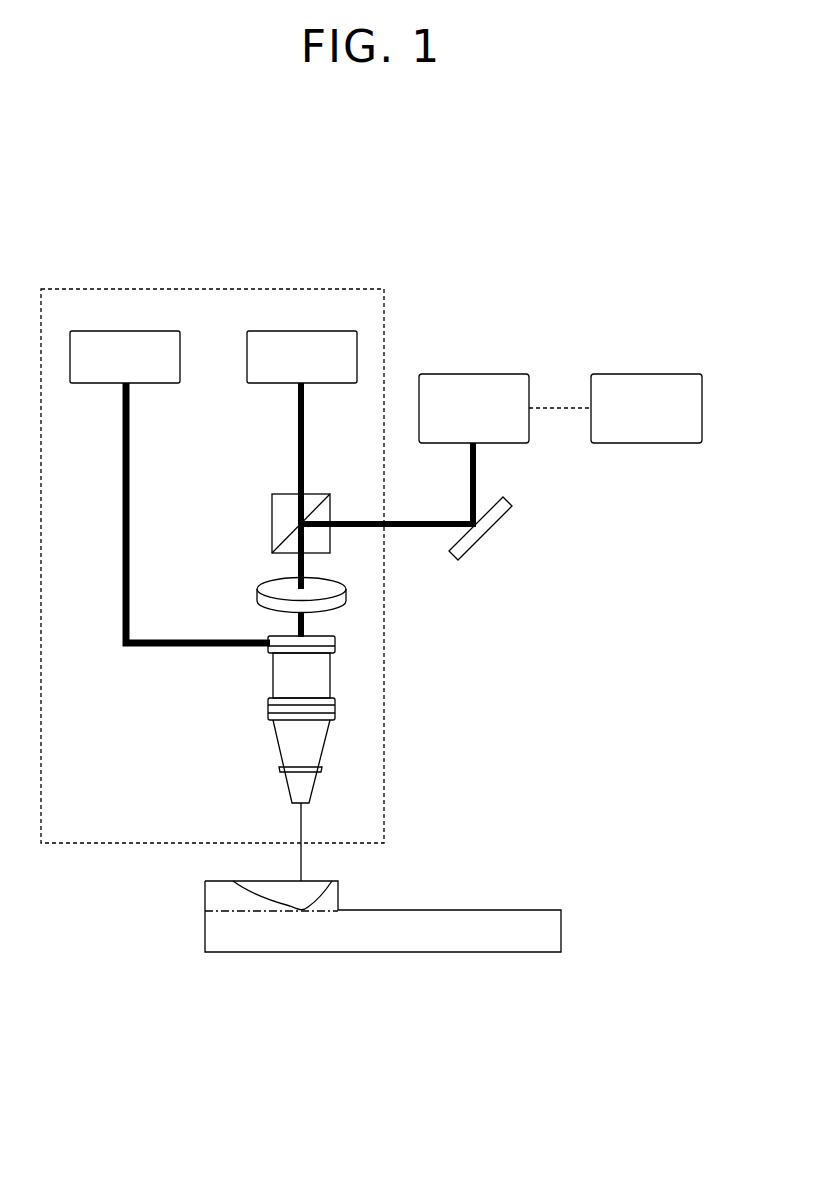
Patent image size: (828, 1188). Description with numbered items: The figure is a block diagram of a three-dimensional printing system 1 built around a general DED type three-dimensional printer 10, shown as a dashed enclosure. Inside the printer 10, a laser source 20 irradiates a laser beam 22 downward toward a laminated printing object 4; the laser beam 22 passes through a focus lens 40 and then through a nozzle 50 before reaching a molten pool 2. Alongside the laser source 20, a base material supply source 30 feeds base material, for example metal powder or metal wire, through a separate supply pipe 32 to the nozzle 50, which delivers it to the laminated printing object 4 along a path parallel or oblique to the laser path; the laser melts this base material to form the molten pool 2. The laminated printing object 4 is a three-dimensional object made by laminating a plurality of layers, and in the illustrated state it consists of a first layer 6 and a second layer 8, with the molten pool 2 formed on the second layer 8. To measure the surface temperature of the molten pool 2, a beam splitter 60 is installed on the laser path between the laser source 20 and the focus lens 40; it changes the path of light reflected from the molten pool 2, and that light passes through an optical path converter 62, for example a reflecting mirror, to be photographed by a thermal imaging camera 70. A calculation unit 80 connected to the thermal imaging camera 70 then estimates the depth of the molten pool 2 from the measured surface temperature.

The 3D printing system 1 is at (383, 192).
The 3D printer 10 is at (211, 289).
The laser source 20 is at (303, 331).
The laser beam 22 is at (298, 421).
The base material supply source 30 is at (127, 331).
The supply pipe 32 is at (123, 511).
The focus lens 40 is at (268, 708).
The nozzle 50 is at (273, 673).
The beam splitter 60 is at (272, 521).
The optical path converter 62 is at (487, 535).
The thermal imaging camera 70 is at (473, 374).
The calculation unit 80 is at (645, 374).
The molten pool 2 is at (304, 900).
The laminated printing object 4 is at (148, 883).
The first layer 6 is at (206, 931).
The second layer 8 is at (206, 892).